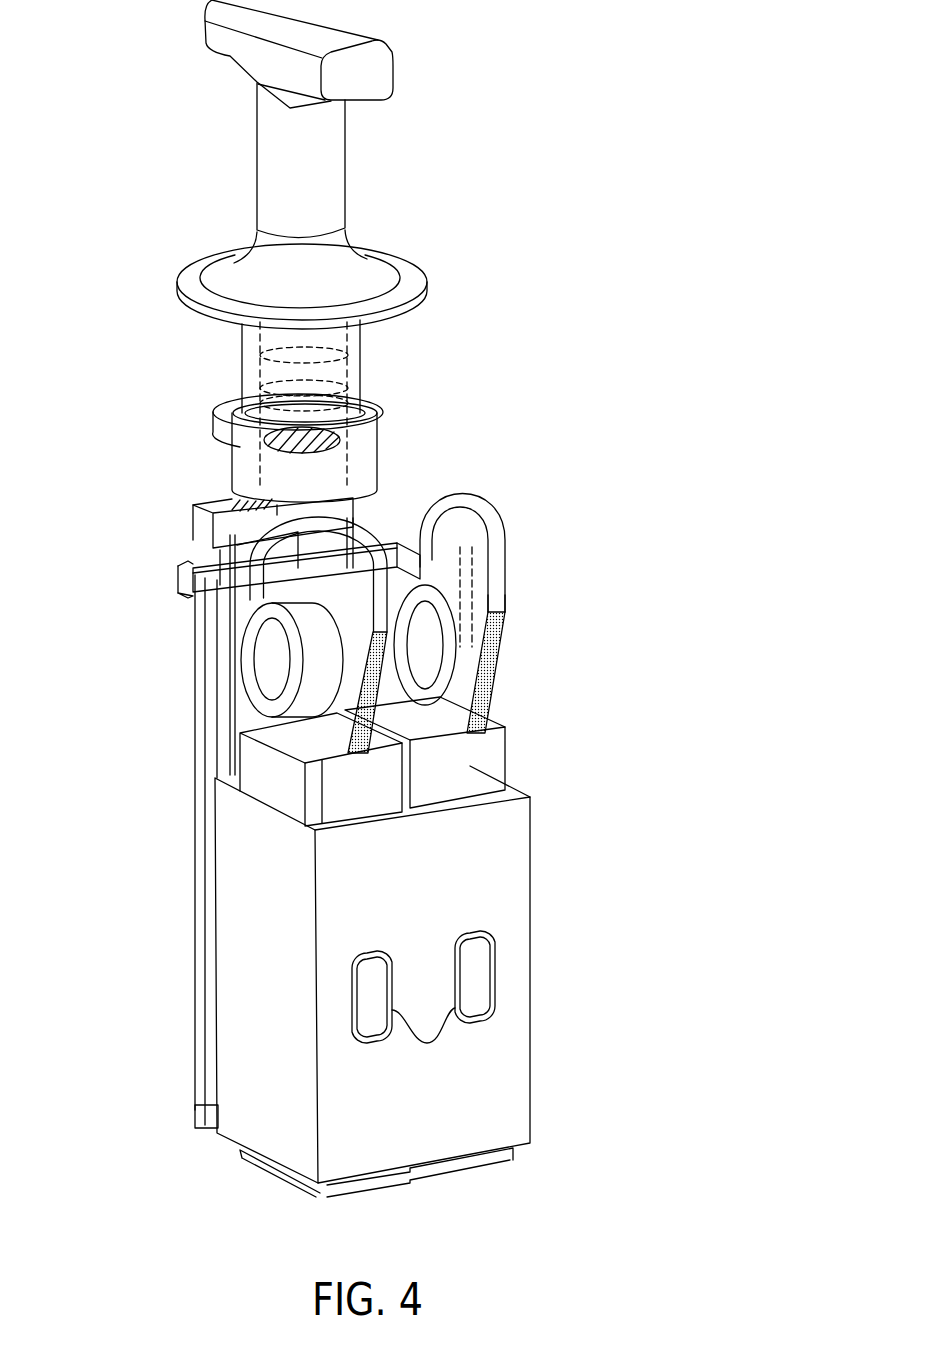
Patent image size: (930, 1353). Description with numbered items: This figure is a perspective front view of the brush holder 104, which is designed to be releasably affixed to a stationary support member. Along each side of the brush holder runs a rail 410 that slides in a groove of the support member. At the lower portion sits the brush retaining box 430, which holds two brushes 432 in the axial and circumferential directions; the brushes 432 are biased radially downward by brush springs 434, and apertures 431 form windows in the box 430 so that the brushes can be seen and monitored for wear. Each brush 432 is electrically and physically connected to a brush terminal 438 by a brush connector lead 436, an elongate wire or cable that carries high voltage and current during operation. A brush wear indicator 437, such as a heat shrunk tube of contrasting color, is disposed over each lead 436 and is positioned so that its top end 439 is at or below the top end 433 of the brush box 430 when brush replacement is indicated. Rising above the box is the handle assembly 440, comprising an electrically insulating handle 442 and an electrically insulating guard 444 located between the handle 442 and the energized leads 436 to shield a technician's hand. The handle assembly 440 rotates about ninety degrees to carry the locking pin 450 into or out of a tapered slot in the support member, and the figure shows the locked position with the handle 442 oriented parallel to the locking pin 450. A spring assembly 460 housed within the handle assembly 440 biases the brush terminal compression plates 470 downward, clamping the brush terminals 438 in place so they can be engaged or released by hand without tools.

The brush holder 104 is at (435, 168).
The rail 410 is at (196, 853).
The brush retaining box 430 is at (440, 887).
The aperture 431 is at (423, 1004).
The brush 432 is at (383, 802).
The top end of the brush box 433 is at (510, 787).
The brush spring 434 is at (262, 663).
The brush connector lead 436 is at (497, 545).
The brush wear indicator 437 is at (502, 667).
The brush terminal 438 is at (180, 587).
The top end of the brush wear indicator 439 is at (500, 611).
The handle assembly 440 is at (220, 195).
The handle 442 is at (205, 20).
The guard 444 is at (327, 295).
The locking pin 450 is at (217, 402).
The spring assembly 460 is at (347, 437).
The brush terminal compression plate 470 is at (193, 528).